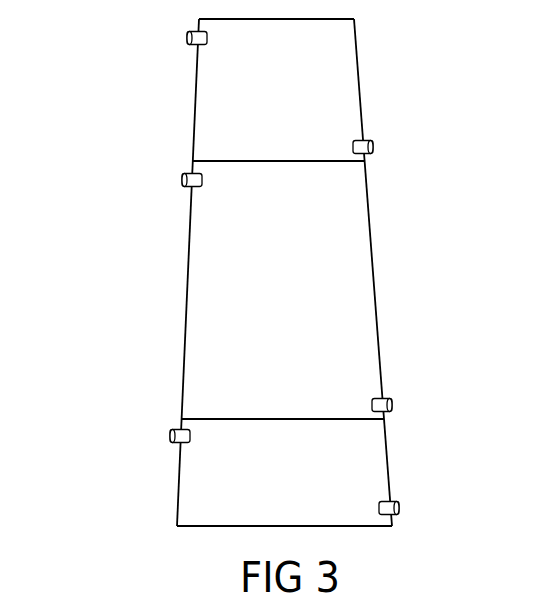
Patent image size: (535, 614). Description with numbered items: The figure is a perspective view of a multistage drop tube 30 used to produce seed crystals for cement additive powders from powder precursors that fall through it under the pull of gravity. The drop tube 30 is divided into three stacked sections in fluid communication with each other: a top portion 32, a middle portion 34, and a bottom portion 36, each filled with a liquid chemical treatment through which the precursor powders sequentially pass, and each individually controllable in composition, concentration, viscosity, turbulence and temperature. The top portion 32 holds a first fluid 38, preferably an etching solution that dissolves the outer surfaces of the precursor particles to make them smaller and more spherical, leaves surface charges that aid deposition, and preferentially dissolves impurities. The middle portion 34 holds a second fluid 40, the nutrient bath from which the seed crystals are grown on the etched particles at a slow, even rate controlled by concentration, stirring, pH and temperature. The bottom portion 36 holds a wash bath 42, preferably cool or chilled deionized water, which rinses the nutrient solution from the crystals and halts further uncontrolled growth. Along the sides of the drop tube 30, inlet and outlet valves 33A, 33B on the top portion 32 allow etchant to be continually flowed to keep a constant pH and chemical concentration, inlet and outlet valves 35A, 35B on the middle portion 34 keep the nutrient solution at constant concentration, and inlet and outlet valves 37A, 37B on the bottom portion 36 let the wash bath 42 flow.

The drop tube 30 is at (82, 217).
The top portion 32 is at (196, 97).
The middle portion 34 is at (187, 299).
The bottom portion 36 is at (179, 489).
The first fluid 38 is at (345, 70).
The second fluid 40 is at (358, 279).
The wash bath 42 is at (380, 462).
The inlet valve 33A is at (187, 38).
The outlet valve 33B is at (375, 147).
The inlet valve 35A is at (182, 180).
The outlet valve 35B is at (394, 405).
The inlet valve 37A is at (170, 436).
The outlet valve 37B is at (401, 508).